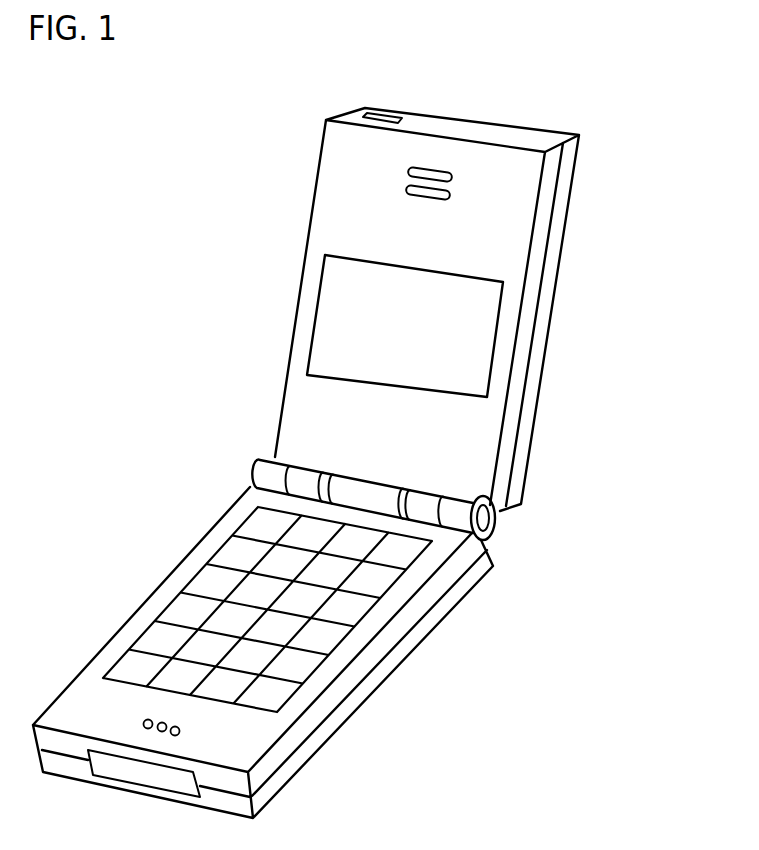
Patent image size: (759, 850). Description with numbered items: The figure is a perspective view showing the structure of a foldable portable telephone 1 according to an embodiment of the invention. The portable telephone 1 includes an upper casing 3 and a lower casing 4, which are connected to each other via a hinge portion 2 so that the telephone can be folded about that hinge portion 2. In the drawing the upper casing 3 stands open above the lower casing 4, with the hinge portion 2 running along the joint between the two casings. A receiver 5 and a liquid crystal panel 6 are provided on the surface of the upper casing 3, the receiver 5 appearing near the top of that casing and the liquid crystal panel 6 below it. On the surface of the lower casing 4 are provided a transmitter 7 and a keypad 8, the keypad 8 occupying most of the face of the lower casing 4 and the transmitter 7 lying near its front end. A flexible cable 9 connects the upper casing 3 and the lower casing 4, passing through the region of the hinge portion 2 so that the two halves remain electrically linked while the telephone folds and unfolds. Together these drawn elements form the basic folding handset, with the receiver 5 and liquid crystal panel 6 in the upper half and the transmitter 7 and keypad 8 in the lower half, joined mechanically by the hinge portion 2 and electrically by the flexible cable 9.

The portable telephone 1 is at (138, 150).
The hinge portion 2 is at (493, 521).
The upper casing 3 is at (327, 211).
The lower casing 4 is at (175, 576).
The receiver 5 is at (452, 183).
The liquid crystal panel 6 is at (483, 305).
The transmitter 7 is at (182, 729).
The keypad 8 is at (367, 615).
The flexible cable 9 is at (373, 493).